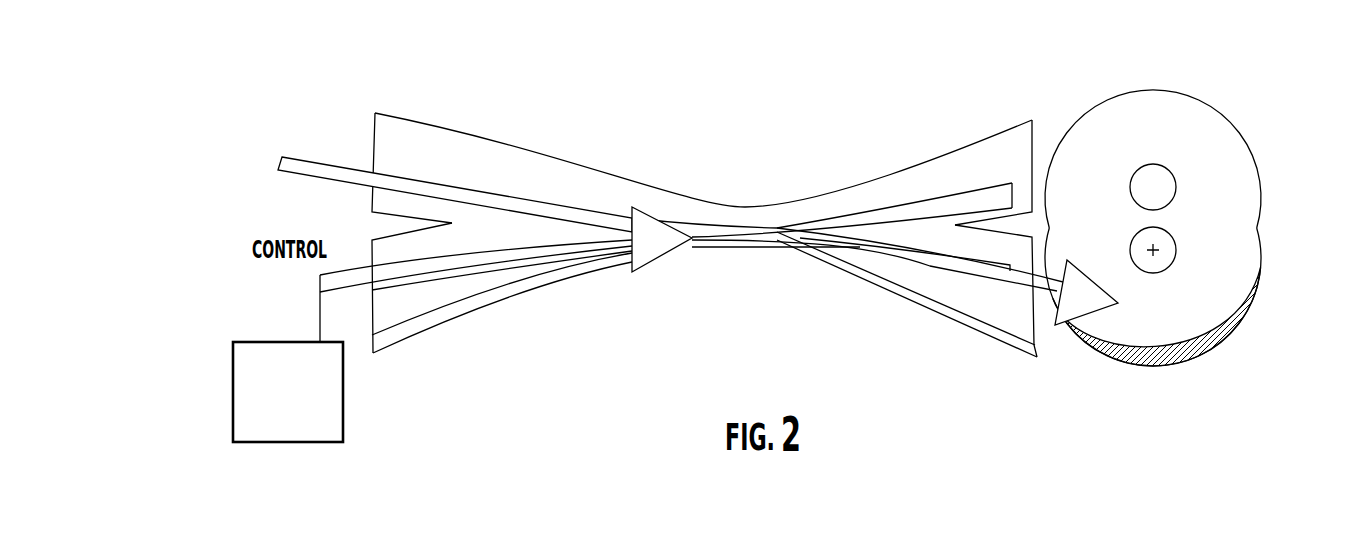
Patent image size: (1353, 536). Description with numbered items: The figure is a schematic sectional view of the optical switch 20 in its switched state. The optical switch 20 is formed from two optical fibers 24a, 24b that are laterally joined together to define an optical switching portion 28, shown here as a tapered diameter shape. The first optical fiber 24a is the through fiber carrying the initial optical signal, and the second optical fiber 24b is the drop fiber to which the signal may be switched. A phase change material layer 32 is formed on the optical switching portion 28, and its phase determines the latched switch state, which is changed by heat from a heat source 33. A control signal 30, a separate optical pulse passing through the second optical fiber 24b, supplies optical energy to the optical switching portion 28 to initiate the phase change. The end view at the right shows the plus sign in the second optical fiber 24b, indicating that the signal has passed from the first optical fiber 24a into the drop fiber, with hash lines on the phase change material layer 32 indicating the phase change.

The optical switch 20 is at (733, 100).
The first optical fiber 24a is at (392, 127).
The second optical fiber 24b is at (366, 330).
The optical switching portion 28 is at (790, 188).
The control signal 30 is at (320, 283).
The phase change material layer 32 is at (520, 296).
The heat source 33 is at (233, 390).